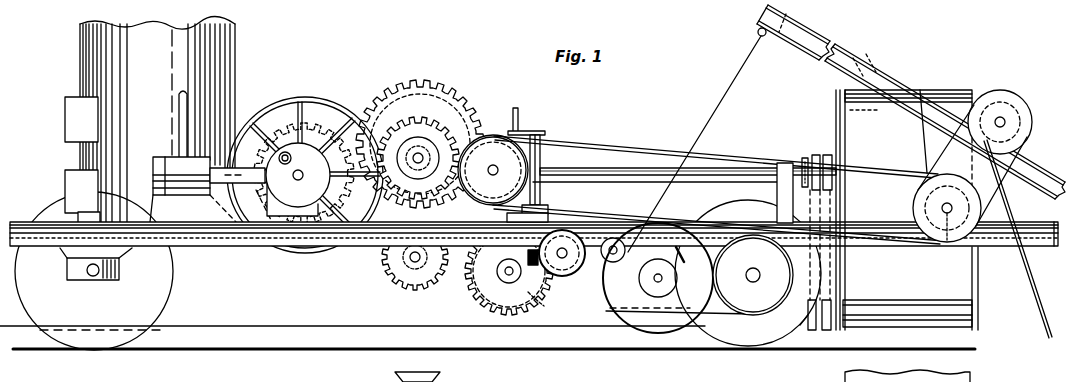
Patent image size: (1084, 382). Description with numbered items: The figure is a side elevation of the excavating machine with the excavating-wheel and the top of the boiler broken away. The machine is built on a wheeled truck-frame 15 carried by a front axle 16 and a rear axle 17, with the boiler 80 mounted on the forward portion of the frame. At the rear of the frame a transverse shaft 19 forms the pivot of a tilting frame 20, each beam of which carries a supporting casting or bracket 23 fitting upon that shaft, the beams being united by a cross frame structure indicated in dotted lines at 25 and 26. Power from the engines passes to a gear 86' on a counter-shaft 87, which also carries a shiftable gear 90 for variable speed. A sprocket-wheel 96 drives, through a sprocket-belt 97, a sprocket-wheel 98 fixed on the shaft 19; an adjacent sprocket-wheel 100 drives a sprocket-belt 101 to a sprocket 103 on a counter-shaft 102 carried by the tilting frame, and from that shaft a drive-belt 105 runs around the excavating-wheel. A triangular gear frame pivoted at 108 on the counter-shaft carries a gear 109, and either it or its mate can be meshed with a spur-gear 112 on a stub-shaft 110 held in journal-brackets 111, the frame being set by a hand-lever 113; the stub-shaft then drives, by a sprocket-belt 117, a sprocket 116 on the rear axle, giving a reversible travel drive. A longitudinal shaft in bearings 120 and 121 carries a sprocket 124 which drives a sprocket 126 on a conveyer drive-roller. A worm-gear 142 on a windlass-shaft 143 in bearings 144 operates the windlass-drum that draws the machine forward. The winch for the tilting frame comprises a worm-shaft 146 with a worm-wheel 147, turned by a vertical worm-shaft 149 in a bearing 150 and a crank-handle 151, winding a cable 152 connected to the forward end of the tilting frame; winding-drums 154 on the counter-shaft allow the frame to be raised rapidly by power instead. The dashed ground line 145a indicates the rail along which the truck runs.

The wheeled truck-frame 15 is at (222, 250).
The front axle 16 is at (91, 283).
The rear axle 17 is at (752, 282).
The shaft 19 is at (944, 214).
The tilting frame 20 is at (844, 71).
The supporting casting or bracket 23 is at (925, 147).
The cross frame structure 25 is at (806, 22).
The cross frame structure 26 is at (858, 62).
The boiler 80 is at (236, 78).
The gear 86' is at (436, 123).
The counter-shaft 87 is at (418, 158).
The gear 90 is at (420, 144).
The sprocket-wheel 96 is at (495, 136).
The sprocket-belt 97 is at (590, 148).
The sprocket-wheel 98 is at (915, 199).
The sprocket-wheel 100 is at (541, 213).
The sprocket-belt 101 is at (1005, 153).
The counter-shaft 102 is at (1006, 121).
The sprocket 103 is at (1021, 135).
The drive-belt 105 is at (1038, 99).
The pivotal engagement 108 is at (424, 156).
The gear 109 is at (426, 279).
The stub-shaft 110 is at (499, 171).
The journal-brackets 111 is at (488, 250).
The spur-gear 112 is at (480, 300).
The hand-lever 113 is at (536, 302).
The sprocket 116 is at (767, 311).
The sprocket-belt 117 is at (604, 312).
The bearing 120 is at (777, 193).
The bearing 121 is at (630, 186).
The sprocket 124 is at (822, 156).
The sprocket 126 is at (835, 306).
The worm-gear 142 is at (676, 334).
The windlass-shaft 143 is at (664, 278).
The bearings 144 is at (686, 260).
The ground rail 145a is at (180, 326).
The worm-shaft 146 is at (574, 277).
The worm-wheel 147 is at (536, 266).
The worm-shaft 149 is at (542, 171).
The bearing 150 is at (588, 216).
The crank-handle 151 is at (526, 135).
The cable 152 is at (714, 115).
The winding-drums 154 is at (427, 150).